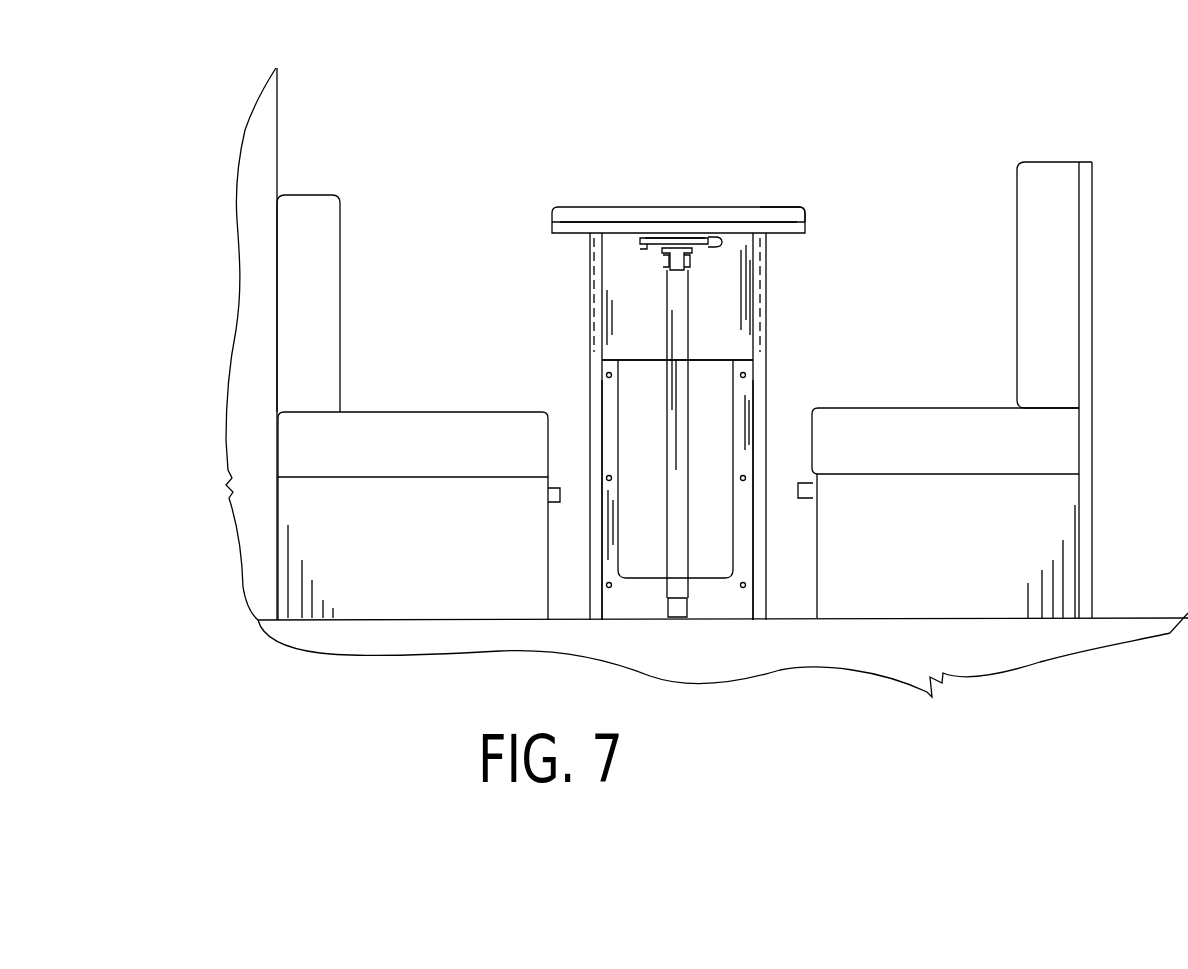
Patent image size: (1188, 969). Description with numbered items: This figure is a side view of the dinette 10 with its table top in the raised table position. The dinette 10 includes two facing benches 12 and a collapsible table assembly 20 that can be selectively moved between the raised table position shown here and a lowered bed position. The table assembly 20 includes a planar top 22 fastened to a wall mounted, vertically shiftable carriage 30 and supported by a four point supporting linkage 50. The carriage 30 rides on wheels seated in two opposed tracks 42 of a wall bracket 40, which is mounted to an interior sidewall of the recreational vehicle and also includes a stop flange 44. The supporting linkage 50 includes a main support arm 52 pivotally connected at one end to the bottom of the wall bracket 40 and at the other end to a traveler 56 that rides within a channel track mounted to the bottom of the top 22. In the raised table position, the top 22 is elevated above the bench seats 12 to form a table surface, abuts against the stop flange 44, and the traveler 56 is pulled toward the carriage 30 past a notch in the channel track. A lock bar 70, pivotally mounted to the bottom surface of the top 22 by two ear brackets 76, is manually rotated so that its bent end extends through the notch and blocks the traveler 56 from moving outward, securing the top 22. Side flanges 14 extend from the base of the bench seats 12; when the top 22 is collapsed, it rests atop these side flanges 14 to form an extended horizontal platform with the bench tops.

The dinette 10 is at (802, 144).
The benches 12 is at (275, 540).
The side flanges 14 is at (555, 502).
The table assembly 20 is at (643, 215).
The top 22 is at (702, 220).
The carriage 30 is at (645, 330).
The wall bracket 40 is at (772, 373).
The tracks 42 is at (590, 450).
The stop flange 44 is at (778, 212).
The supporting linkage 50 is at (666, 499).
The main support arm 52 is at (675, 335).
The traveler 56 is at (683, 268).
The lock bar 70 is at (650, 256).
The ear brackets 76 is at (645, 248).